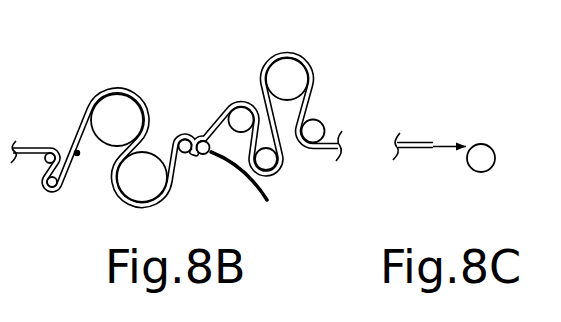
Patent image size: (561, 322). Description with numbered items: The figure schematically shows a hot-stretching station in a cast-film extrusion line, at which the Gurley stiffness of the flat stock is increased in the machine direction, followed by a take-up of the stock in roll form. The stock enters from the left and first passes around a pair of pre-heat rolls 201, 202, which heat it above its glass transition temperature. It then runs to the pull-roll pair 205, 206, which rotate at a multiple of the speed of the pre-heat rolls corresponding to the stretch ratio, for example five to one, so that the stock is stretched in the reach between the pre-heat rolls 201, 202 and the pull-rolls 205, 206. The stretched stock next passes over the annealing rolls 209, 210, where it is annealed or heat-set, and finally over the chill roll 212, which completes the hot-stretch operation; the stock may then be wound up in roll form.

The pre-heat roll 201 is at (108, 105).
The pre-heat roll 202 is at (107, 226).
The pull-roll 205 is at (196, 220).
The pull-roll 206 is at (249, 185).
The annealing roll 209 is at (240, 118).
The annealing roll 210 is at (295, 183).
The chill roll 212 is at (328, 38).